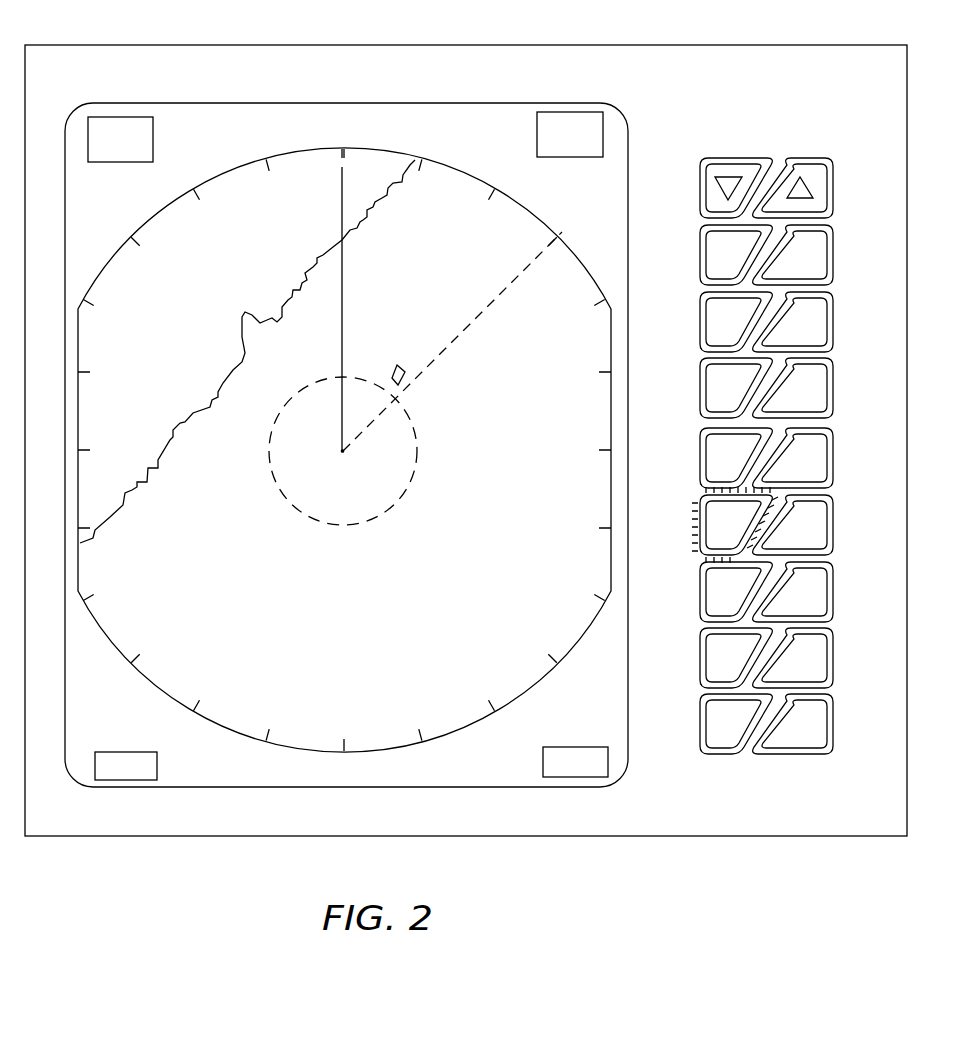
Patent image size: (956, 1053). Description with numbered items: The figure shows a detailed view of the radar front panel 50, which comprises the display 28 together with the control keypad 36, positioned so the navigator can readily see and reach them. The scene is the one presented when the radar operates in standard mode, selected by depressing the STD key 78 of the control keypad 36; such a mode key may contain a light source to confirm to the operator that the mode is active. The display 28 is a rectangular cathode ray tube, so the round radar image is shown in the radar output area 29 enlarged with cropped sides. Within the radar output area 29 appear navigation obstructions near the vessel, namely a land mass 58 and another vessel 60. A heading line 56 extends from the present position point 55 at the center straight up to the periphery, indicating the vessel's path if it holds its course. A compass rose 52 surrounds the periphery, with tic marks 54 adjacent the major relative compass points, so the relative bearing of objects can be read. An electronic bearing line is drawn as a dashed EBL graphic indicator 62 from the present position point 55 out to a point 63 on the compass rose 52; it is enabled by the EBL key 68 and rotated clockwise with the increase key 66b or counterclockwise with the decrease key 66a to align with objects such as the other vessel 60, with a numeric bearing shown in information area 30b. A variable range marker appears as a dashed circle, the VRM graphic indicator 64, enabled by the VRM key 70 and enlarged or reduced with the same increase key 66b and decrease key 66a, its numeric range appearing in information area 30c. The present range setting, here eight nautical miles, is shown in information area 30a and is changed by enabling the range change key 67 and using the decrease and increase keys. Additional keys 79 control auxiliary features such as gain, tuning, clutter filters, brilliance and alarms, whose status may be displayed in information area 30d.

The radar front panel 50 is at (241, 45).
The display 28 is at (76, 102).
The radar output area 29 is at (360, 613).
The information area 30a is at (148, 751).
The information area 30b is at (138, 163).
The information area 30c is at (555, 158).
The information area 30d is at (558, 746).
The control keypad 36 is at (788, 139).
The compass rose 52 is at (233, 164).
The tic marks 54 is at (334, 149).
The present position point 55 is at (342, 452).
The heading line 56 is at (343, 313).
The land mass 58 is at (193, 414).
The another vessel 60 is at (400, 366).
The EBL graphic indicator 62 is at (465, 340).
The point on compass rose 63 is at (562, 231).
The VRM graphic indicator 64 is at (415, 470).
The decrease key 66a is at (713, 202).
The increase key 66b is at (820, 180).
The range change key 67 is at (716, 268).
The EBL key 68 is at (716, 400).
The VRM key 70 is at (716, 335).
The STD key 78 is at (716, 535).
The additional keys 79 is at (808, 388).